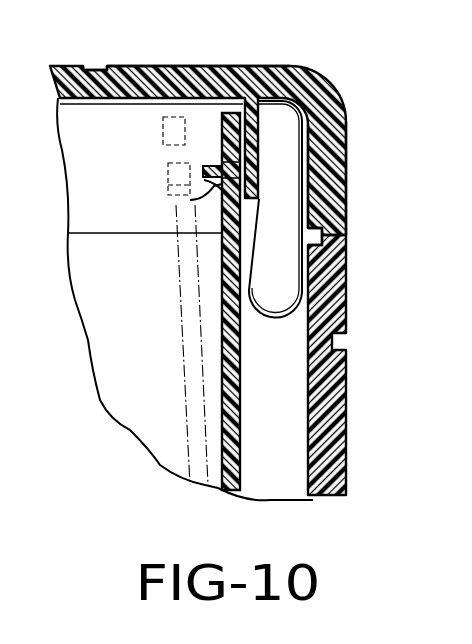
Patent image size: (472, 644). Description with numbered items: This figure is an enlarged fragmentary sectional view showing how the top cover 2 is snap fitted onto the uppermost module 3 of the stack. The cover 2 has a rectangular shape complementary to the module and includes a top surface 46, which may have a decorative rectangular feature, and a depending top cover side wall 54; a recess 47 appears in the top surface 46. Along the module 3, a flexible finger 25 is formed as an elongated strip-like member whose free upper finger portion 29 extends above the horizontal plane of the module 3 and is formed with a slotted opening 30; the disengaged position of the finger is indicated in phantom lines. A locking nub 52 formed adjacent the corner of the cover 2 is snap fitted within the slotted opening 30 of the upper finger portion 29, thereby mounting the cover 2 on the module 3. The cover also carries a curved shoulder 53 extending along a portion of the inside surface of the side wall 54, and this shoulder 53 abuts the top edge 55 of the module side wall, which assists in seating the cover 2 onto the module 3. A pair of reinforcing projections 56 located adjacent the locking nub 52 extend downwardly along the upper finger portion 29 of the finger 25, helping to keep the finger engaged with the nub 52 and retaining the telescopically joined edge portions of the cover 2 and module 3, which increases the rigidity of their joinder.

The top cover 2 is at (216, 62).
The module 3 is at (350, 455).
The flexible finger 25 is at (220, 445).
The upper finger portion 29 is at (222, 136).
The slotted opening 30 is at (214, 190).
The top surface 46 is at (163, 66).
The recess 47 is at (96, 70).
The locking nub 52 is at (205, 172).
The curved shoulder 53 is at (305, 236).
The top cover side wall 54 is at (333, 156).
The top edge 55 is at (330, 232).
The reinforcing projection 56 is at (280, 272).